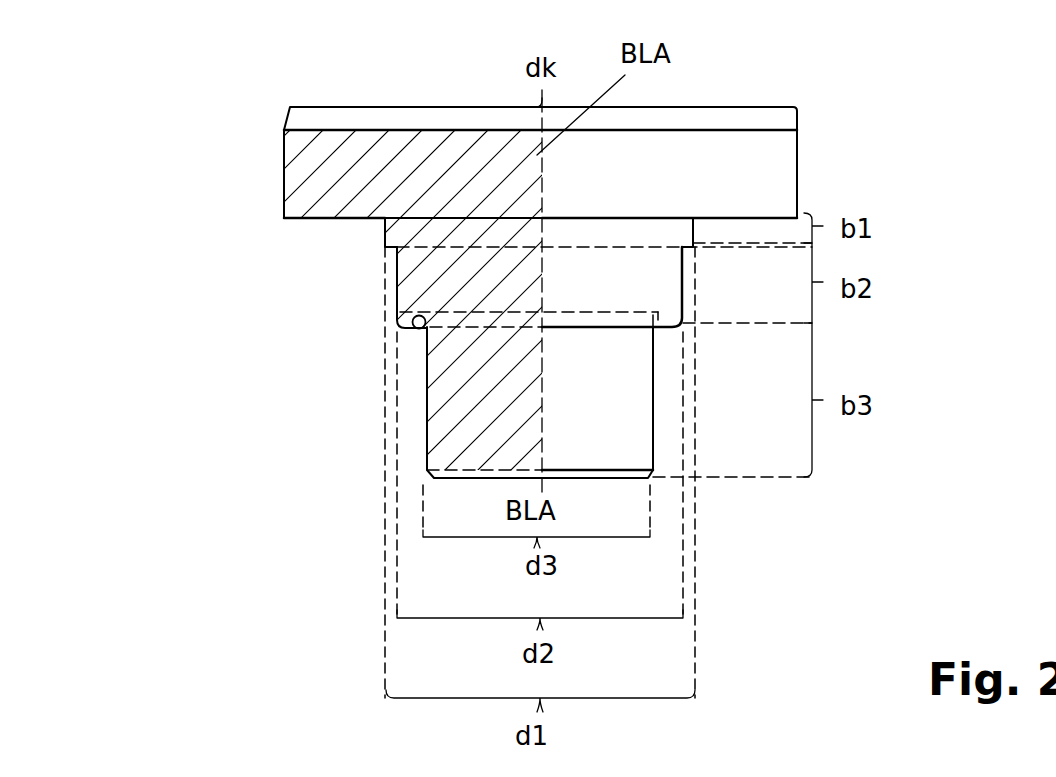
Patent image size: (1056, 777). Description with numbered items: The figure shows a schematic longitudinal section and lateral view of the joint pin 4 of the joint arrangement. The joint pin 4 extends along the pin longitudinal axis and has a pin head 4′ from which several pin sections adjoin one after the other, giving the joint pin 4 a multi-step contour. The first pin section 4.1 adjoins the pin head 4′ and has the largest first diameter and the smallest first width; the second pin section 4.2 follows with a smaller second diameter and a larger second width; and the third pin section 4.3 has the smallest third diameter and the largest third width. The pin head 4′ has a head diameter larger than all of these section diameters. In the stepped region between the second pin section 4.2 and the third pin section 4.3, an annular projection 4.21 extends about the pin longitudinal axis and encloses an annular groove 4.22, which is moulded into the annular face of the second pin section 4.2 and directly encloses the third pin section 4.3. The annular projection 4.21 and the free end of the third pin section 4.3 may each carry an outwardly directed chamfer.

The joint pin 4 is at (845, 88).
The pin head 4′ is at (345, 150).
The first pin section 4.1 is at (386, 230).
The second pin section 4.2 is at (397, 310).
The annular projection 4.21 is at (398, 331).
The annular groove 4.22 is at (417, 327).
The third pin section 4.3 is at (425, 452).